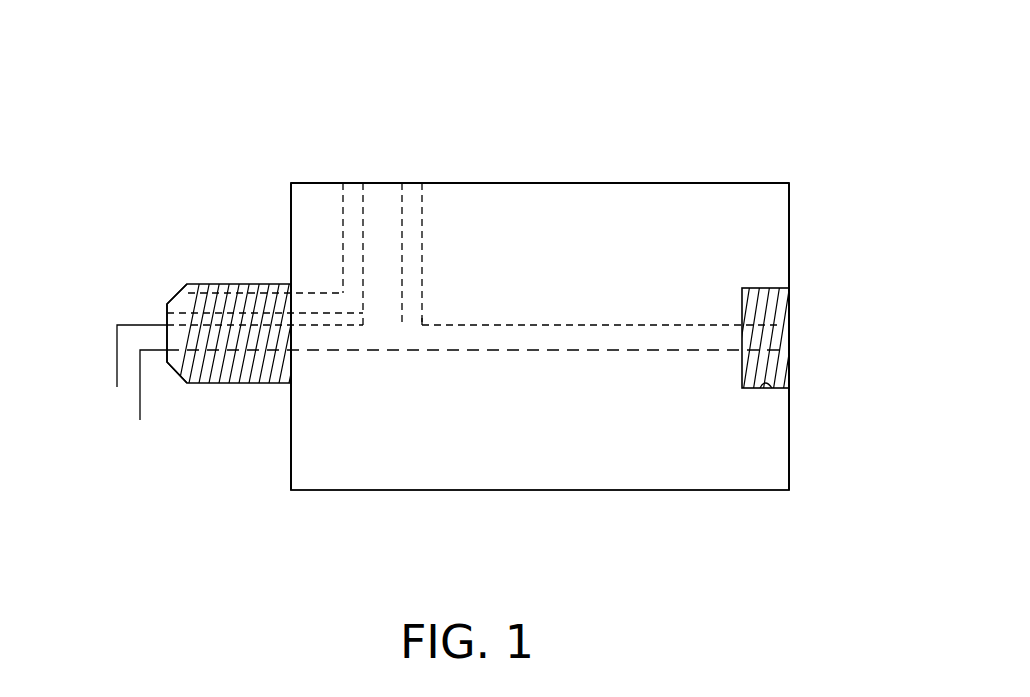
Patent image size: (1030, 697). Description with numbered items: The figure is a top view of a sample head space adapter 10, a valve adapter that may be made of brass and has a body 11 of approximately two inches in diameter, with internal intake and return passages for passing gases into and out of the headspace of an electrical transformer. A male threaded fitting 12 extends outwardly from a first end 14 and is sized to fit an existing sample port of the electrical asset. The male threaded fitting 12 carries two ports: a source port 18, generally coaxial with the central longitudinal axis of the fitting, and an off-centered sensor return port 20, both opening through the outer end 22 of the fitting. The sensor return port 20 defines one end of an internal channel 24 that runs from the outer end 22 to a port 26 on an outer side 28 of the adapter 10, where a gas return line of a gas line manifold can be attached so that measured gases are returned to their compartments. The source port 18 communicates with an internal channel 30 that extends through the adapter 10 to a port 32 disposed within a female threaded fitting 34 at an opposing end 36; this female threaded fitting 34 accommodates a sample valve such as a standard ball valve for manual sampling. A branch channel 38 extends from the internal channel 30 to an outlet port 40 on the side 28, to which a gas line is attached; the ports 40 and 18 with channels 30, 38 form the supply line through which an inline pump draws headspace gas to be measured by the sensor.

The sample head space adapter 10 is at (797, 125).
The body 11 is at (593, 470).
The male threaded fitting 12 is at (250, 283).
The first end 14 is at (290, 453).
The source port 18 is at (165, 336).
The sensor return port 20 is at (176, 295).
The outer end 22 is at (161, 357).
The internal channel 24 is at (353, 265).
The port 26 is at (350, 183).
The outer side 28 is at (641, 183).
The internal channel 30 is at (619, 338).
The port 32 is at (789, 337).
The female threaded fitting 34 is at (775, 385).
The opposing end 36 is at (790, 440).
The branch channel 38 is at (408, 293).
The outlet port 40 is at (418, 183).